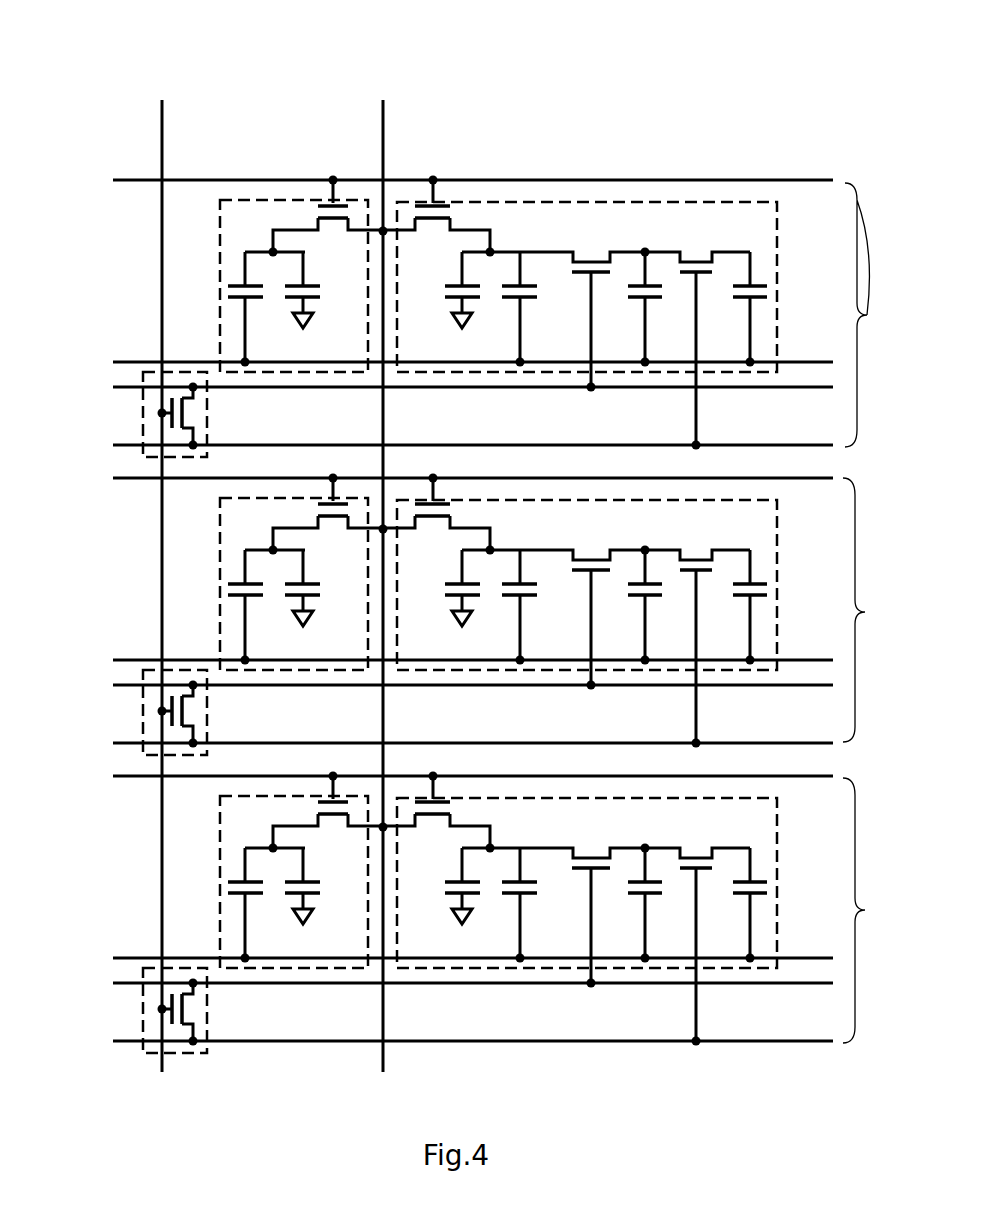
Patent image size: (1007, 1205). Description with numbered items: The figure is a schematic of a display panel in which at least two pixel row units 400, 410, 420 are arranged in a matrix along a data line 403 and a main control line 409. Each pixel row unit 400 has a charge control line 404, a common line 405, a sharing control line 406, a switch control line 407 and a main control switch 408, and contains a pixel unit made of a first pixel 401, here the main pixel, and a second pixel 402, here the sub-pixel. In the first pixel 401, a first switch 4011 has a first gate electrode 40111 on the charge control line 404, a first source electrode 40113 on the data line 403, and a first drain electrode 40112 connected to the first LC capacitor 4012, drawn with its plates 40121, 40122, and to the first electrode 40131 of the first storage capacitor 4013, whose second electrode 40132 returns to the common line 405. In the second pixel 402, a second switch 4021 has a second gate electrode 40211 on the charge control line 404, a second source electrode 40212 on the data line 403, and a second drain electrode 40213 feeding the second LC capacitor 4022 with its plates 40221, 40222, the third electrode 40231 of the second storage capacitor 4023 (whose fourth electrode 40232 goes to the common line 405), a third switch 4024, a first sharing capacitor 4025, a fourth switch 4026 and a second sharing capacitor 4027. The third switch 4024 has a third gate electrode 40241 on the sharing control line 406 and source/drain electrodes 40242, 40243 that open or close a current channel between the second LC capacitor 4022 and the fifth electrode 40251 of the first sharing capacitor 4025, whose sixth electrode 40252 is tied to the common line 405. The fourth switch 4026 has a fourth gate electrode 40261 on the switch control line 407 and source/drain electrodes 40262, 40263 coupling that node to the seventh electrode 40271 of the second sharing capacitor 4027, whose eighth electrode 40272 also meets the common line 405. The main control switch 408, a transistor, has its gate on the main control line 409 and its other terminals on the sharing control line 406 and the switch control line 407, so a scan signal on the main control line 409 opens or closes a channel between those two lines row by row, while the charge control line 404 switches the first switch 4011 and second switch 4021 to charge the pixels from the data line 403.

The pixel row unit 400 is at (857, 200).
The first pixel 401 is at (217, 230).
The second pixel 402 is at (777, 225).
The data line 403 is at (385, 98).
The charge control line 404 is at (138, 178).
The common line 405 is at (122, 360).
The sharing control line 406 is at (122, 382).
The switch control line 407 is at (118, 447).
The main control switch 408 is at (143, 405).
The main control line 409 is at (162, 100).
The pixel row unit 410 is at (865, 612).
The pixel row unit 420 is at (865, 910).
The first switch 4011 is at (329, 226).
The first gate electrode 40111 is at (333, 178).
The first drain electrode 40112 is at (318, 205).
The second electrode of first transistor 40113 is at (350, 205).
The first liquid crystal capacitor 4012 is at (275, 306).
The first plate of first capacitor 40121 is at (295, 283).
The second plate of first capacitor (ground) 40122 is at (317, 323).
The first storage capacitor 4013 is at (168, 355).
The first electrode 40131 is at (235, 280).
The second electrode 40132 is at (225, 298).
The second switch 4021 is at (406, 302).
The second gate electrode 40211 is at (432, 200).
The second source electrode 40212 is at (416, 238).
The second drain electrode 40213 is at (437, 240).
The second liquid crystal capacitor 4022 is at (476, 269).
The first plate of third capacitor 40221 is at (470, 265).
The second plate of third capacitor (ground) 40222 is at (477, 318).
The second storage capacitor 4023 is at (512, 261).
The third electrode 40231 is at (520, 283).
The fourth electrode 40232 is at (527, 305).
The third switch 4024 is at (572, 265).
The third gate electrode 40241 is at (581, 278).
The third source electrode 40242 is at (577, 253).
The second electrode of third transistor 40243 is at (595, 245).
The first sharing capacitor 4025 is at (652, 341).
The fifth electrode 40251 is at (640, 247).
The sixth electrode 40252 is at (660, 300).
The fourth switch 4026 is at (694, 262).
The fourth gate electrode 40261 is at (708, 285).
The fourth source electrode 40262 is at (681, 252).
The second electrode of fourth transistor 40263 is at (714, 250).
The second sharing capacitor 4027 is at (791, 259).
The first plate of sixth capacitor 40271 is at (760, 283).
The eighth electrode 40272 is at (757, 300).